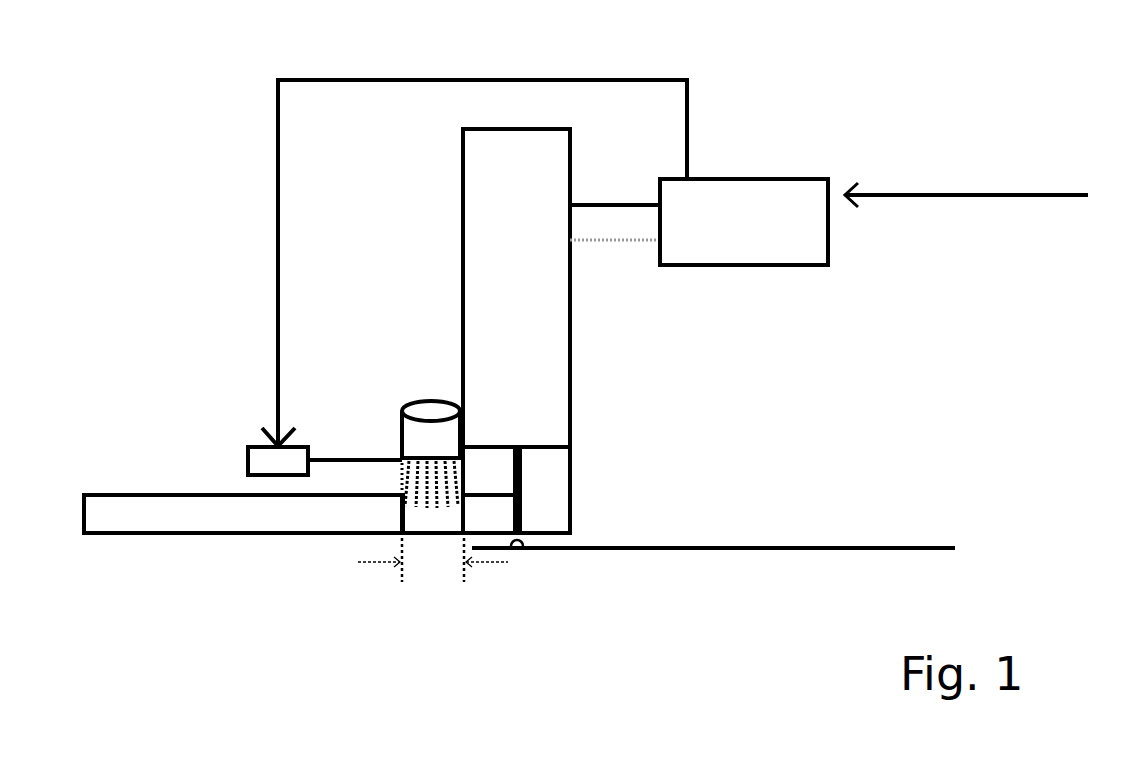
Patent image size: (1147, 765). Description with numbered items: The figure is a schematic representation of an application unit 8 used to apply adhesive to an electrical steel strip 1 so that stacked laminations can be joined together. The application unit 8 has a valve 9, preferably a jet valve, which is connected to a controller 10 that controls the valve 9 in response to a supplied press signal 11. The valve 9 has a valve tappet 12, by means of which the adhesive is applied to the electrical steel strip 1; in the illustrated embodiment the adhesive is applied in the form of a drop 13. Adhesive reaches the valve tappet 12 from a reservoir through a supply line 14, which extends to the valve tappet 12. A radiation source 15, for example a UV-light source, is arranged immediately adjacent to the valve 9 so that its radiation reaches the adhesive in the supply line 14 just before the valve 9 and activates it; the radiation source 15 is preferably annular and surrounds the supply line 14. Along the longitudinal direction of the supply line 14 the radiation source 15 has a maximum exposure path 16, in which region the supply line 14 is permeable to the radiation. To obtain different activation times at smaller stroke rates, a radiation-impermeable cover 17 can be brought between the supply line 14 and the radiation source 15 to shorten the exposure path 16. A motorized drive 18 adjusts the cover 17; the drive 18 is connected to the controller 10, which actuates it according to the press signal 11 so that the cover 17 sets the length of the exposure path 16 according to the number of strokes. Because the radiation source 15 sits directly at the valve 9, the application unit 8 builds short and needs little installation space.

The application unit 8 is at (602, 40).
The valve 9 is at (525, 369).
The controller 10 is at (687, 190).
The press signal 11 is at (973, 195).
The valve tappet 12 is at (522, 475).
The drop 13 is at (522, 550).
The supply line 14 is at (133, 495).
The radiation source 15 is at (433, 422).
The exposure path 16 is at (433, 545).
The cover 17 is at (330, 458).
The drive 18 is at (262, 460).
The electrical steel strip 1 is at (741, 546).